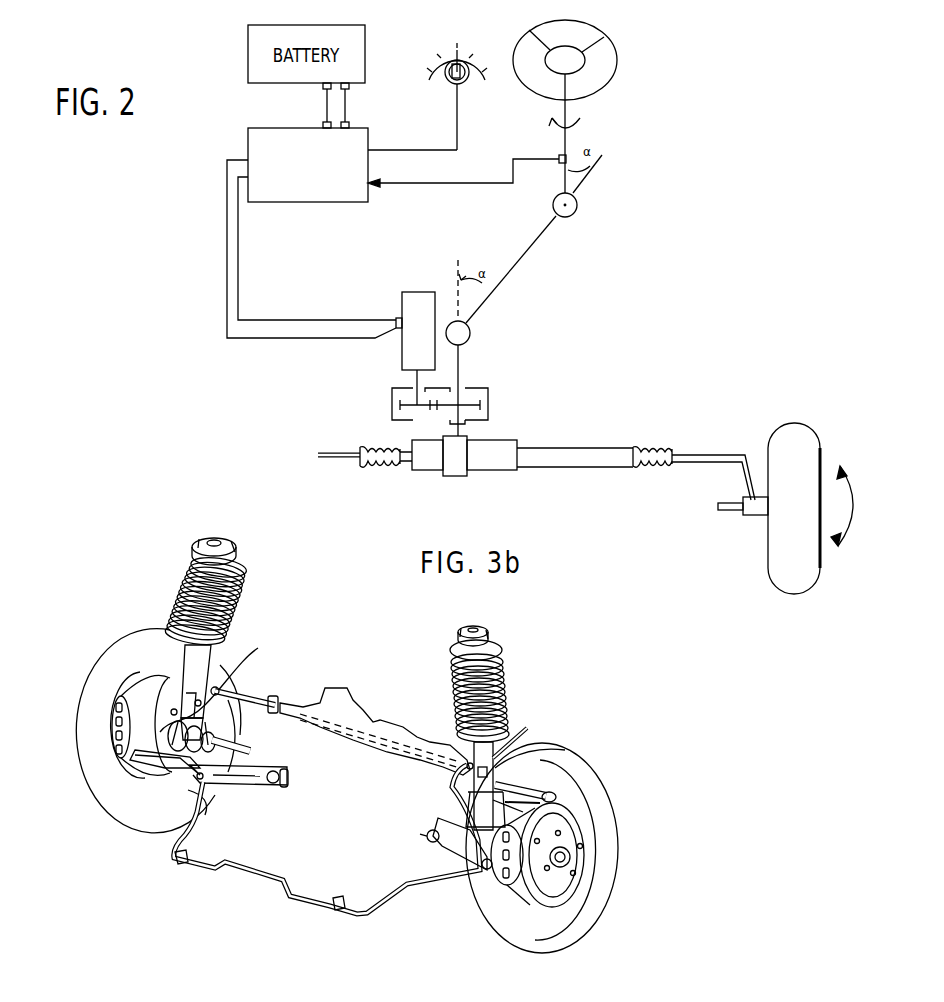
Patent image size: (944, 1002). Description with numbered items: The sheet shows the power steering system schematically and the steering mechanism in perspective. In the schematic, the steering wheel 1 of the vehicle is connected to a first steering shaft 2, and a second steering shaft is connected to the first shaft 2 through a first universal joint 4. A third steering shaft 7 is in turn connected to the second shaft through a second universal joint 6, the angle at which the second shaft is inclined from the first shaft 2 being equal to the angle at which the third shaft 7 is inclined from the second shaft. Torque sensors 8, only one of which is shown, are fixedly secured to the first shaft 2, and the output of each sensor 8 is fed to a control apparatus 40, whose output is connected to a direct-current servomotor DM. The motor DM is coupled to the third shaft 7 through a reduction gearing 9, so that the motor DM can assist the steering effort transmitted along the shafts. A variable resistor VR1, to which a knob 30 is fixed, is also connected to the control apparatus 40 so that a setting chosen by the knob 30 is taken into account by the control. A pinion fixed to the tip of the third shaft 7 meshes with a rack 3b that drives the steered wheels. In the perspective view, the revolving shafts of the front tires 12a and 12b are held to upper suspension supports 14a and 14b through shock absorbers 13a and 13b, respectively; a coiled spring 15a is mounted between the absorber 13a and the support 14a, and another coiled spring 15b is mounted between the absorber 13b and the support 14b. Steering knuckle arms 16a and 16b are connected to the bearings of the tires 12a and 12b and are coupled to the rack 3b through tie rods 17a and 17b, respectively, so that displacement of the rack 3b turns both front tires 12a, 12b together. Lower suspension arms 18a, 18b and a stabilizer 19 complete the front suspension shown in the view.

In FIG. 2, the steering wheel 1 is at (618, 62).
In FIG. 2, the first steering shaft 2 is at (575, 146).
In FIG. 2, the first universal joint 4 is at (577, 213).
In FIG. 2, the second universal joint 6 is at (471, 335).
In FIG. 2, the third steering shaft 7 is at (462, 372).
In FIG. 2, the torque sensor 8 is at (557, 166).
In FIG. 2, the reduction gearing 9 is at (490, 408).
In FIG. 2, the knob 30 is at (472, 50).
In FIG. 2, the control apparatus 40 is at (318, 202).
In FIG. 2, the variable resistor VR1 is at (476, 84).
In FIG. 2, the direct-current servomotor DM is at (412, 292).
In FIG. 3b, the rack 3b is at (383, 750).
In FIG. 3b, the front tire 12a is at (112, 815).
In FIG. 3b, the front tire 12b is at (583, 918).
In FIG. 3b, the shock absorber 13a is at (178, 662).
In FIG. 3b, the shock absorber 13b is at (528, 736).
In FIG. 3b, the upper suspension support 14a is at (237, 554).
In FIG. 3b, the upper suspension support 14b is at (490, 646).
In FIG. 3b, the coiled spring 15a is at (228, 626).
In FIG. 3b, the coiled spring 15b is at (505, 690).
In FIG. 3b, the steering knuckle arm 16a is at (228, 702).
In FIG. 3b, the steering knuckle arm 16b is at (552, 796).
In FIG. 3b, the tie rod 17a is at (250, 692).
In FIG. 3b, the tie rod 17b is at (552, 762).
In FIG. 3b, the lower suspension arm 18a is at (246, 790).
In FIG. 3b, the lower suspension arm 18b is at (448, 842).
In FIG. 3b, the stabilizer 19 is at (272, 868).